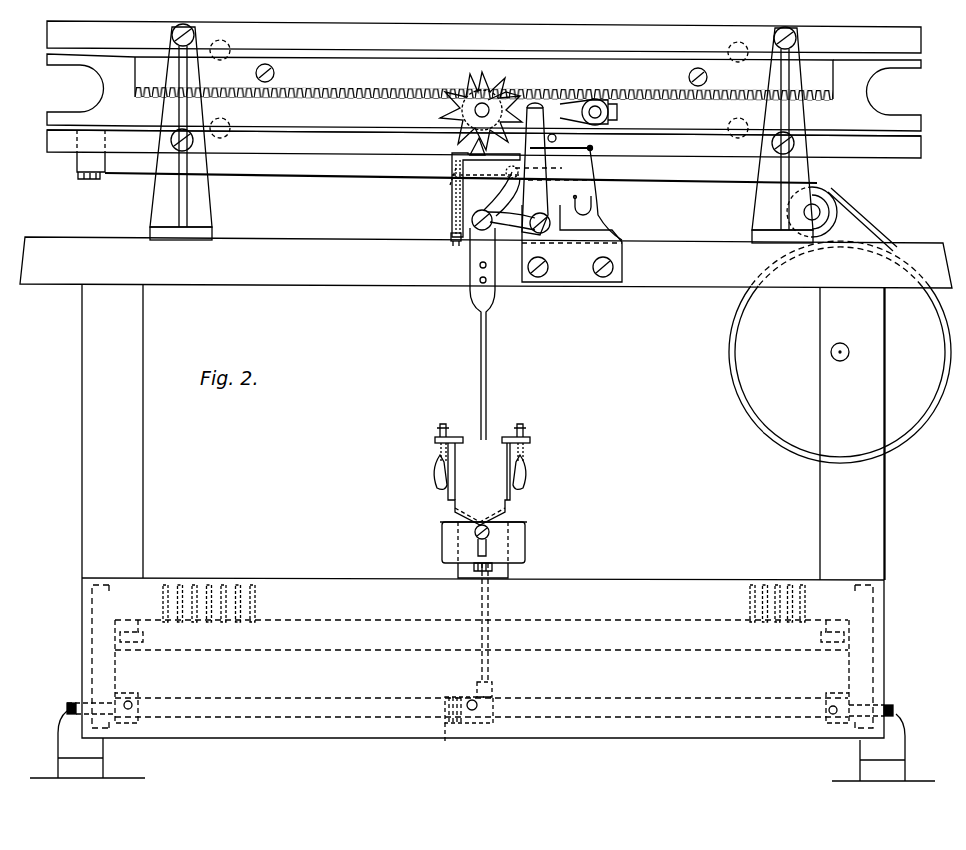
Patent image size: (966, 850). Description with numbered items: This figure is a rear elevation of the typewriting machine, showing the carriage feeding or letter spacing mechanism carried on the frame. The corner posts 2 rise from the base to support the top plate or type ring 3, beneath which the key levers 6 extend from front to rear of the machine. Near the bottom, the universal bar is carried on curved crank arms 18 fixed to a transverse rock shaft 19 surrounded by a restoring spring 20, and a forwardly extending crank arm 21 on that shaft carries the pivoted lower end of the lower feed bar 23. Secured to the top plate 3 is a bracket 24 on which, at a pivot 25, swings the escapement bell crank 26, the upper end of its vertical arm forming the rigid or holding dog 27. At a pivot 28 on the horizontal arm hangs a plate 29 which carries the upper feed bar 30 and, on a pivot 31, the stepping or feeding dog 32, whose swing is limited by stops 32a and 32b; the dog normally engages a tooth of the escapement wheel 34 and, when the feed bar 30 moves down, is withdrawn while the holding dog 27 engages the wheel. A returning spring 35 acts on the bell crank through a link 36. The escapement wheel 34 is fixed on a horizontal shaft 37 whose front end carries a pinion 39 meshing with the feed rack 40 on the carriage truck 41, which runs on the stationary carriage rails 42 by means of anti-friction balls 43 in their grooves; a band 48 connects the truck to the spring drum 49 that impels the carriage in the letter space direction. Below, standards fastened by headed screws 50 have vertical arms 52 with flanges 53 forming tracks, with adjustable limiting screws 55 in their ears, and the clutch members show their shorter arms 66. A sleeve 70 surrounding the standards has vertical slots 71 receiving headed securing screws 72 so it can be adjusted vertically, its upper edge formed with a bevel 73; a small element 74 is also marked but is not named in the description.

The corner posts 2 is at (143, 485).
The top plate or type ring 3 is at (429, 286).
The key levers 6 is at (240, 610).
The crank arms 18 is at (115, 668).
The rock shaft 19 is at (607, 702).
The restoring spring 20 is at (449, 744).
The crank arm 21 is at (490, 703).
The lower feed bar 23 is at (489, 602).
The bracket 24 is at (572, 243).
The pivot 25 is at (550, 226).
The escapement bell crank 26 is at (535, 169).
The rigid or holding dog 27 is at (540, 106).
The pivot 28 is at (497, 215).
The plate 29 is at (476, 208).
The upper feed bar 30 is at (486, 338).
The pivot 31 is at (566, 171).
The stepping or feeding dog 32 is at (452, 152).
The stop 32a is at (452, 172).
The stop 32b is at (450, 240).
The escapement wheel 34 is at (498, 85).
The returning spring 35 is at (595, 203).
The link 36 is at (561, 158).
The horizontal shaft 37 is at (492, 104).
The pinion 39 is at (440, 115).
The feed rack 40 is at (484, 79).
The carriage truck 41 is at (855, 92).
The carriage rails 42 is at (916, 45).
The anti-friction balls 43 is at (225, 137).
The band 48 is at (650, 190).
The spring drum 49 is at (840, 352).
The headed screws 50 is at (474, 572).
The vertical arms 52 is at (479, 484).
The flanges 53 is at (447, 488).
The adjustable limiting screws 55 is at (445, 427).
The shorter arms 66 is at (525, 478).
The sleeve 70 is at (518, 545).
The vertical slots 71 is at (478, 549).
The headed securing screws 72 is at (490, 538).
The bevel 73 is at (512, 524).
The pin 74 is at (556, 139).